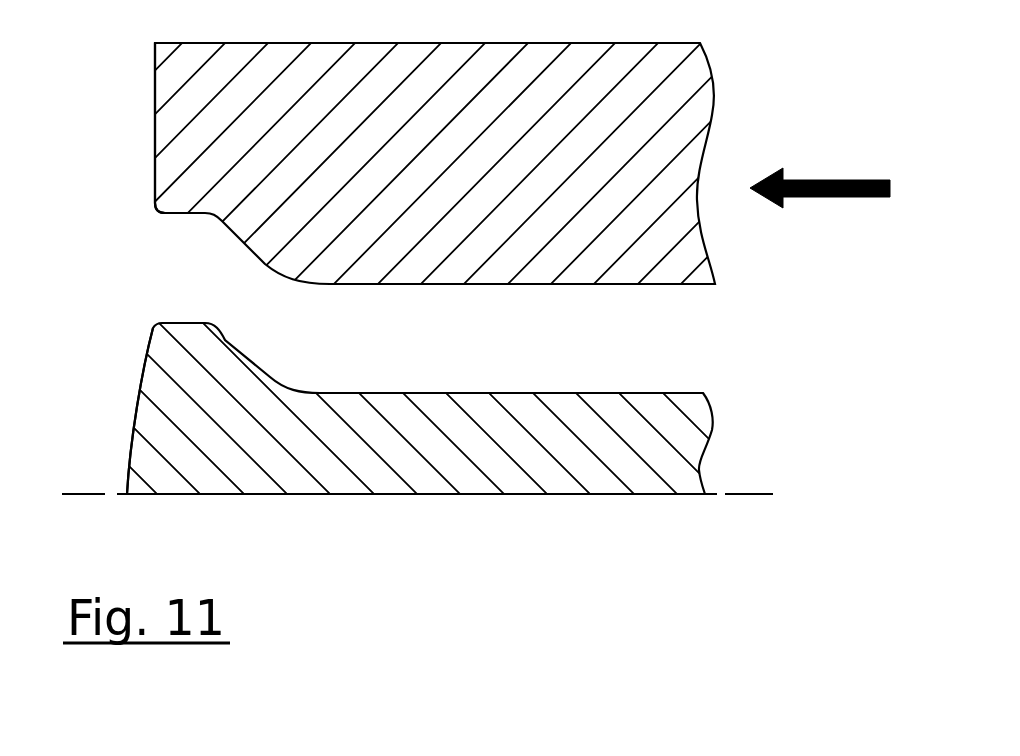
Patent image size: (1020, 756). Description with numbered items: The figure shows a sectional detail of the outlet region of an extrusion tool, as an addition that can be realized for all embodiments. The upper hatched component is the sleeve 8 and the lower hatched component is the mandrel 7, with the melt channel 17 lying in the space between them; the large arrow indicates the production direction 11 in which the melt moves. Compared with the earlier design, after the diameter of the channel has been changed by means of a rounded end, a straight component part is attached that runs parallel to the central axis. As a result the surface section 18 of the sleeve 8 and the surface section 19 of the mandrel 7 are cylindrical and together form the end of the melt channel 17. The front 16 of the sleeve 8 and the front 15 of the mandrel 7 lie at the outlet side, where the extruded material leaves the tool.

The mandrel 7 is at (628, 452).
The sleeve 8 is at (552, 104).
The production direction 11 is at (817, 183).
The front of the mandrel 15 is at (145, 390).
The front of the sleeve 16 is at (170, 153).
The melt channel 17 is at (580, 335).
The surface section of the sleeve 18 is at (193, 225).
The surface section of the mandrel 19 is at (195, 310).